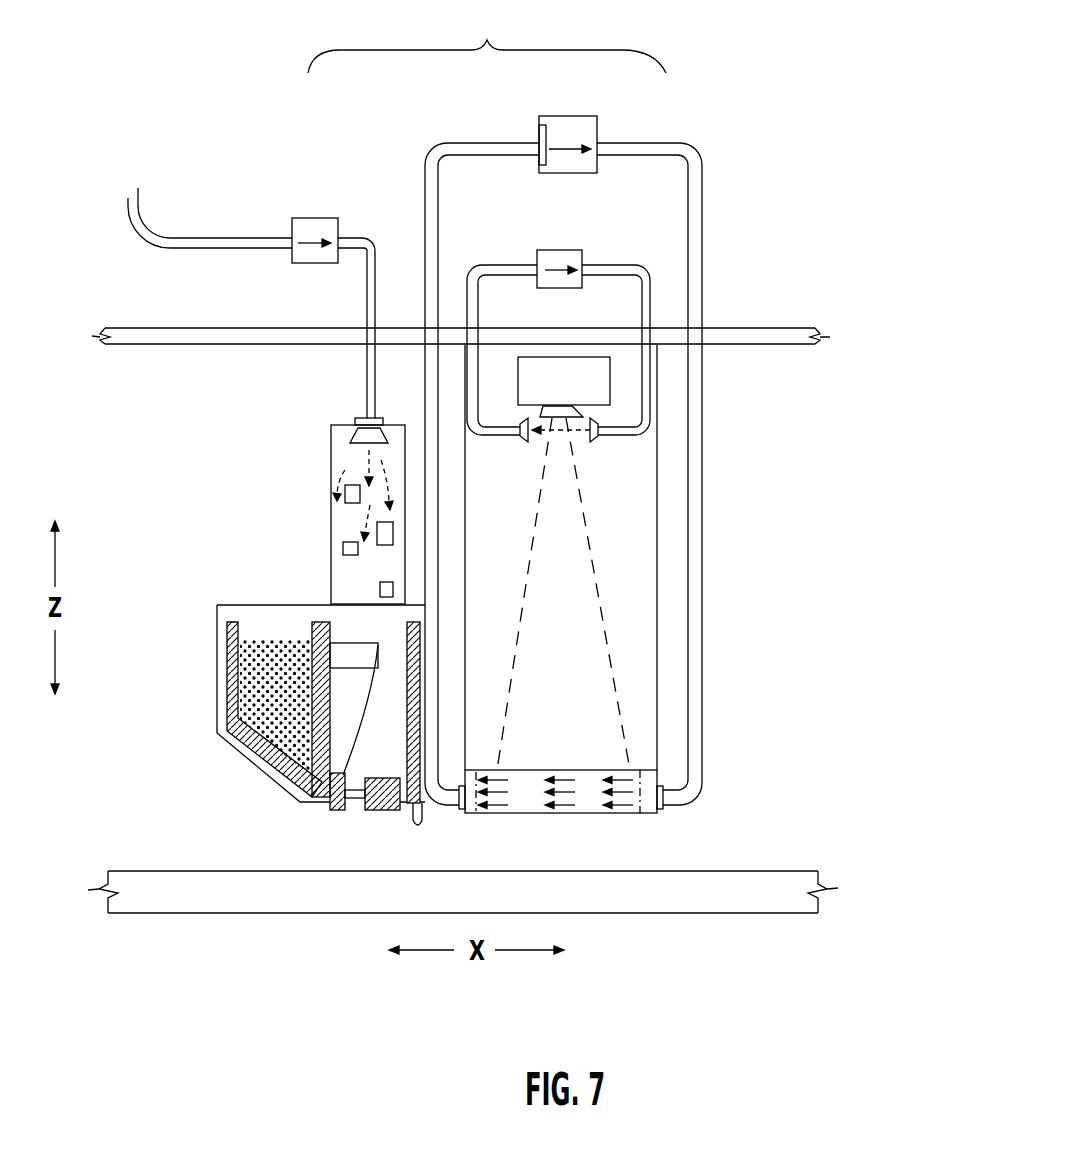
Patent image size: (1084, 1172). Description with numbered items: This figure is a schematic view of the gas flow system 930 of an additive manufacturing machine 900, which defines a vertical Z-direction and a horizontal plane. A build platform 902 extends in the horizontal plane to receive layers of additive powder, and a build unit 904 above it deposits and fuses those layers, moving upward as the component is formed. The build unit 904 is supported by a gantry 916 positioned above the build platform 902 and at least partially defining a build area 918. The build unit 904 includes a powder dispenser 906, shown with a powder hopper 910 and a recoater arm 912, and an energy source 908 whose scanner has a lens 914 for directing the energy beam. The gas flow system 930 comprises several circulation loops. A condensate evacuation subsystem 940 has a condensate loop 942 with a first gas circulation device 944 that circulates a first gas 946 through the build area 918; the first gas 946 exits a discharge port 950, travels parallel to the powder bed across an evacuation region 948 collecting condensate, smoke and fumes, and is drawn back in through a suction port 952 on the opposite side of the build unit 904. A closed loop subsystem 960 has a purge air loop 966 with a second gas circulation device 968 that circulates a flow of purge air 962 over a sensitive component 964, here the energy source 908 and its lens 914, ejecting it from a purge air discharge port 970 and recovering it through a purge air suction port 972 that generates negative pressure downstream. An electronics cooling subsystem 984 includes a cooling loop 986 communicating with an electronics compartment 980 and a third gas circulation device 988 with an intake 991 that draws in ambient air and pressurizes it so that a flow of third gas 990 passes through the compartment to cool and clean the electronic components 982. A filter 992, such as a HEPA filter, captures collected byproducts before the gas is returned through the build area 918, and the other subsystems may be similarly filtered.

The additive manufacturing machine 900 is at (225, 112).
The build platform 902 is at (492, 907).
The build unit 904 is at (668, 572).
The powder dispenser 906 is at (224, 753).
The energy source 908 is at (585, 394).
The powder hopper 910 is at (238, 683).
The recoater arm 912 is at (410, 815).
The lens 914 is at (574, 420).
The gantry 916 is at (776, 325).
The build area 918 is at (860, 654).
The gas flow system 930 is at (487, 40).
The condensate evacuation subsystem 940 is at (624, 456).
The condensate loop 942 is at (704, 356).
The first gas circulation device 944 is at (555, 121).
The first gas 946 is at (604, 820).
The evacuation region 948 is at (531, 806).
The discharge port 950 is at (665, 807).
The suction port 952 is at (479, 813).
The closed loop subsystem 960 is at (611, 313).
The flow of purge air 962 is at (570, 420).
The sensitive component 964 is at (576, 410).
The purge air loop 966 is at (490, 265).
The second gas circulation device 968 is at (558, 250).
The purge air discharge port 970 is at (599, 436).
The purge air suction port 972 is at (525, 442).
The electronics compartment 980 is at (338, 437).
The electronic components 982 is at (352, 500).
The electronics cooling subsystem 984 is at (235, 224).
The cooling loop 986 is at (368, 240).
The third gas circulation device 988 is at (308, 218).
The flow of third gas 990 is at (368, 519).
The intake 991 is at (131, 171).
The filter 992 is at (539, 133).